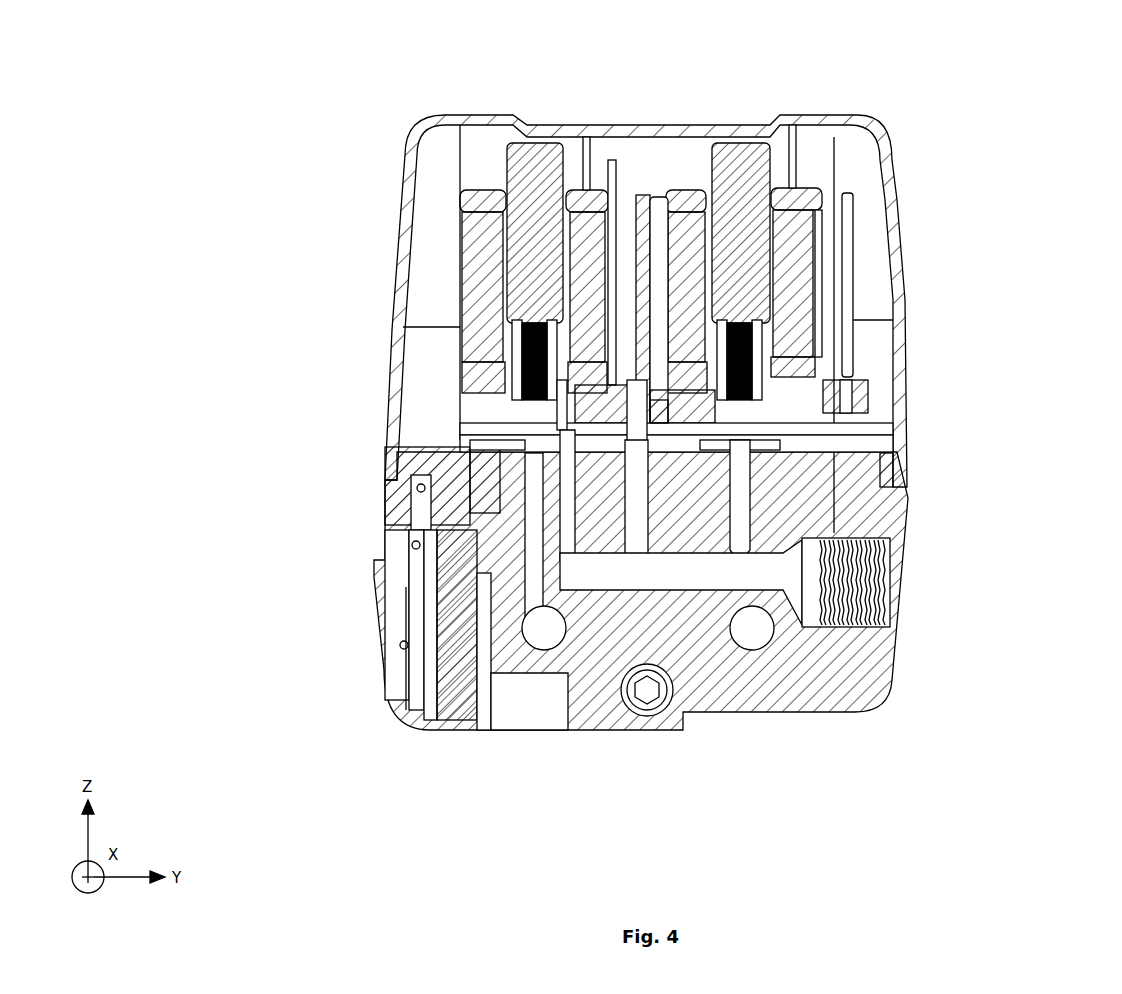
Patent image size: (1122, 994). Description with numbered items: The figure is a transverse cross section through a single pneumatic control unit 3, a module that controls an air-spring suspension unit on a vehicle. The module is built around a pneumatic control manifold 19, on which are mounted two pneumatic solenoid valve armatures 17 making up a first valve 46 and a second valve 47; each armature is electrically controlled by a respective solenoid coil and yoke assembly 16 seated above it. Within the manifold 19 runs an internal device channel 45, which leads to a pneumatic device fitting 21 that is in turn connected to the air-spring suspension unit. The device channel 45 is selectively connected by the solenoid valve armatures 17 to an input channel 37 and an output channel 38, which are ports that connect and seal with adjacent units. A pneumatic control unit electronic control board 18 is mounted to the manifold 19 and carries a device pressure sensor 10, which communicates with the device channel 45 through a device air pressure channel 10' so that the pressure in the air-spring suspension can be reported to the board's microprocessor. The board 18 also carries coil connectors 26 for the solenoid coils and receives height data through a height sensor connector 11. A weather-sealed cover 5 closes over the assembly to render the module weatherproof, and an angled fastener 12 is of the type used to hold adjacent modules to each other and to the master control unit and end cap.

The pneumatic control unit 3 is at (362, 97).
The weather-sealed cover 5 is at (392, 345).
The device pressure sensor 10 is at (425, 485).
The device air pressure channel 10' is at (433, 606).
The height sensor connector 11 is at (459, 555).
The angled fastener 12 is at (647, 680).
The solenoid coil and yoke assembly 16 is at (590, 262).
The pneumatic solenoid valve armature 17 is at (535, 162).
The pneumatic control unit electronic control board 18 is at (820, 428).
The pneumatic control manifold 19 is at (845, 678).
The pneumatic device fitting 21 is at (895, 550).
The coil connector 26 is at (653, 400).
The input channel 37 is at (753, 630).
The output channel 38 is at (543, 628).
The internal device channel 45 is at (702, 575).
The first valve 46 is at (737, 432).
The second valve 47 is at (537, 430).